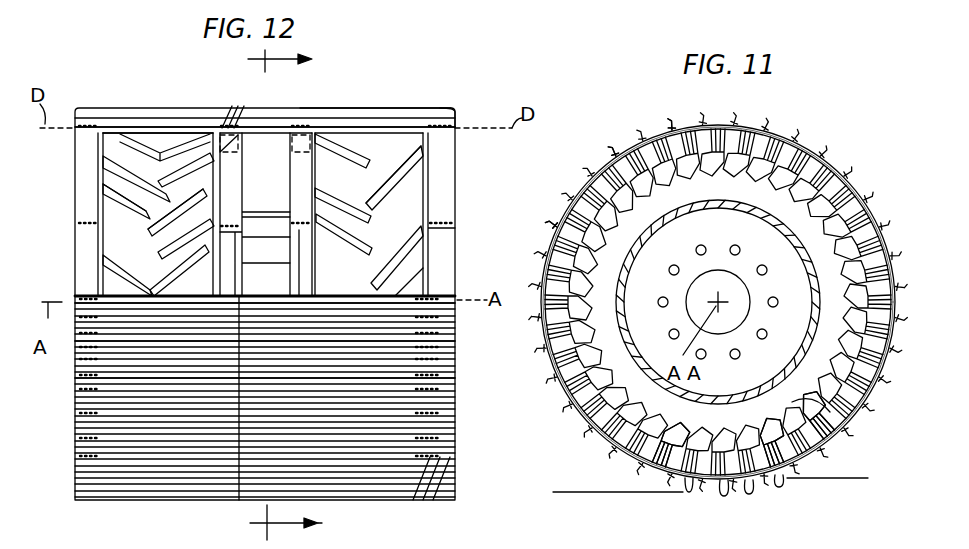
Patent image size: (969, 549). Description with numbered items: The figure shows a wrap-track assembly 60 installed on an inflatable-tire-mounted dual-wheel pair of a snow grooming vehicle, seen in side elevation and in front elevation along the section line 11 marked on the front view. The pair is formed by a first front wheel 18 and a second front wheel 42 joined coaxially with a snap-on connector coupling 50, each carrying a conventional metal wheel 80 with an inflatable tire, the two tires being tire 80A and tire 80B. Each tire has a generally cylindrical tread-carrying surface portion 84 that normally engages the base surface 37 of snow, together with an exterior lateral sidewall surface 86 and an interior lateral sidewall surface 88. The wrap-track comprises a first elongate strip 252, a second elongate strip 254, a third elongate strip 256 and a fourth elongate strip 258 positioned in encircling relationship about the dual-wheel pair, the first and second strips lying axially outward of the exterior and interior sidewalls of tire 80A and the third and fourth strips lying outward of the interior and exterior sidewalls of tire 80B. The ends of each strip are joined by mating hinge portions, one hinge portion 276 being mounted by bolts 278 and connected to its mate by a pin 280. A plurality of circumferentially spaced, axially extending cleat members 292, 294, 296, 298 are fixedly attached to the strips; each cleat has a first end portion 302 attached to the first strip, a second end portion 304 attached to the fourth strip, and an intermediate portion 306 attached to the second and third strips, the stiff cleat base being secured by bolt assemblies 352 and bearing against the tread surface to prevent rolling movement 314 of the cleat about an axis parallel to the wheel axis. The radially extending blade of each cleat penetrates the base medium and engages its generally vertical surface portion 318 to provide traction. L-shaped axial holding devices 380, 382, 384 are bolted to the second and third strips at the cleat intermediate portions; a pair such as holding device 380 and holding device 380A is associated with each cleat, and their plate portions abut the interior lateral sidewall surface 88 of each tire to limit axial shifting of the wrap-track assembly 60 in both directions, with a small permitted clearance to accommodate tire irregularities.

In FIG. 12, the hinge portion 276 is at (93, 221).
In FIG. 12, the bolts 278 is at (304, 229).
In FIG. 12, the pin 280 is at (446, 223).
In FIG. 12, the second end portion 304 is at (76, 112).
In FIG. 12, the front wheel 18 is at (113, 148).
In FIG. 12, the tire 80B is at (172, 160).
In FIG. 12, the holding device 380A is at (218, 133).
In FIG. 12, the bolt assemblies 352 is at (248, 100).
In FIG. 11, the bolt assemblies 352 is at (586, 162).
In FIG. 12, the intermediate portion 306 is at (303, 130).
In FIG. 12, the tire 80A is at (374, 146).
In FIG. 11, the tire 80A is at (851, 317).
In FIG. 12, the front wheel 42 is at (398, 147).
In FIG. 12, the cleat member 298 is at (438, 110).
In FIG. 11, the cleat member 298 is at (718, 282).
In FIG. 12, the wrap-track assembly 60 is at (437, 103).
In FIG. 11, the wrap-track assembly 60 is at (873, 110).
In FIG. 12, the first end portion 302 is at (455, 117).
In FIG. 12, the holding device 380 is at (252, 145).
In FIG. 11, the holding device 380 is at (718, 282).
In FIG. 12, the wheel 80 is at (289, 170).
In FIG. 12, the snap-on connector coupling 50 is at (272, 213).
In FIG. 12, the lateral sidewall surface 86 is at (143, 232).
In FIG. 12, the third elongate strip 256 is at (223, 255).
In FIG. 12, the second elongate strip 254 is at (303, 258).
In FIG. 12, the tread-carrying surface portion 84 is at (140, 241).
In FIG. 12, the first elongate strip 252 is at (440, 272).
In FIG. 11, the first elongate strip 252 is at (718, 283).
In FIG. 12, the cleat member 292 is at (456, 301).
In FIG. 11, the cleat member 292 is at (605, 330).
In FIG. 12, the cleat member 294 is at (448, 341).
In FIG. 11, the cleat member 294 is at (650, 411).
In FIG. 12, the cleat member 296 is at (417, 377).
In FIG. 11, the cleat member 296 is at (680, 413).
In FIG. 12, the fourth elongate strip 258 is at (85, 297).
In FIG. 12, the section line 11- 11 is at (270, 293).
In FIG. 12, the rolling movement 314 is at (329, 536).
In FIG. 11, the holding device 382 is at (722, 300).
In FIG. 11, the holding device 384 is at (770, 169).
In FIG. 11, the lateral sidewall surface 88 is at (718, 291).
In FIG. 11, the base surface 37 is at (702, 475).
In FIG. 11, the generally vertical surface portion 318 is at (734, 505).